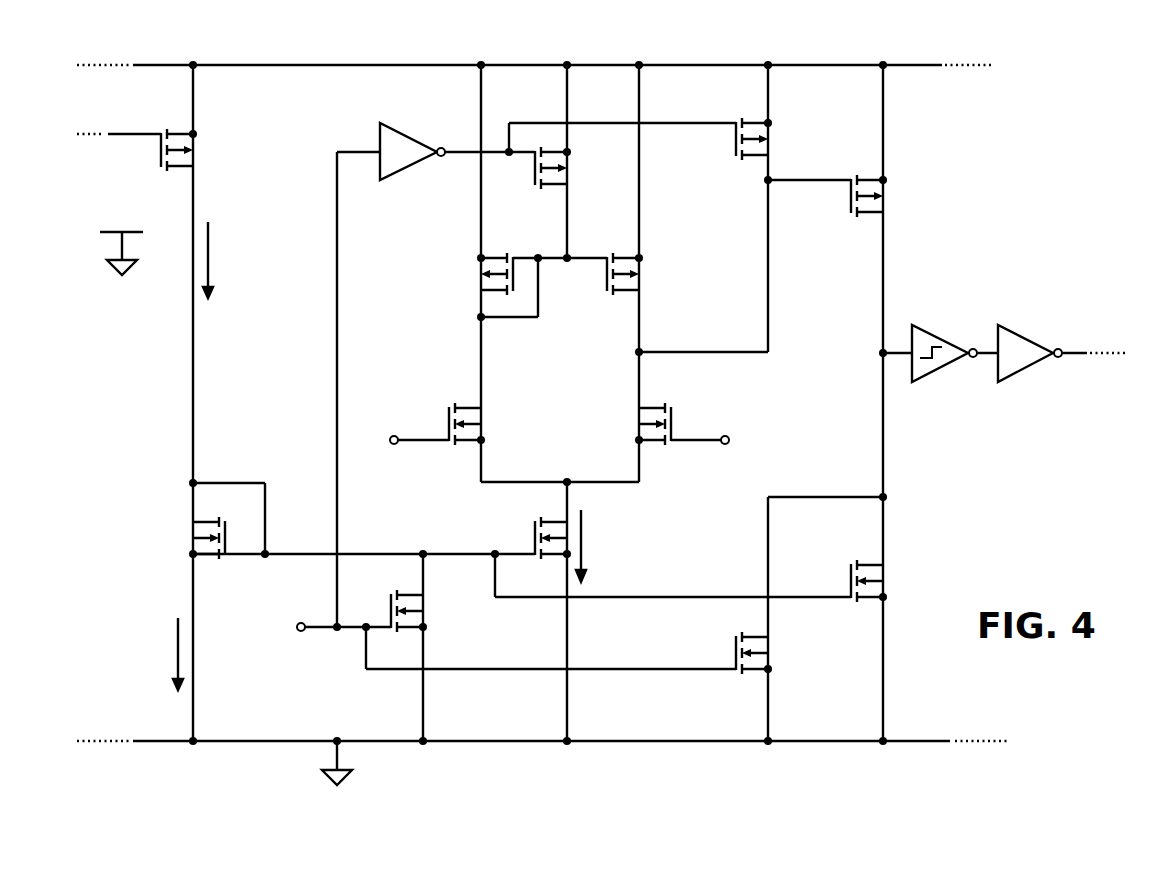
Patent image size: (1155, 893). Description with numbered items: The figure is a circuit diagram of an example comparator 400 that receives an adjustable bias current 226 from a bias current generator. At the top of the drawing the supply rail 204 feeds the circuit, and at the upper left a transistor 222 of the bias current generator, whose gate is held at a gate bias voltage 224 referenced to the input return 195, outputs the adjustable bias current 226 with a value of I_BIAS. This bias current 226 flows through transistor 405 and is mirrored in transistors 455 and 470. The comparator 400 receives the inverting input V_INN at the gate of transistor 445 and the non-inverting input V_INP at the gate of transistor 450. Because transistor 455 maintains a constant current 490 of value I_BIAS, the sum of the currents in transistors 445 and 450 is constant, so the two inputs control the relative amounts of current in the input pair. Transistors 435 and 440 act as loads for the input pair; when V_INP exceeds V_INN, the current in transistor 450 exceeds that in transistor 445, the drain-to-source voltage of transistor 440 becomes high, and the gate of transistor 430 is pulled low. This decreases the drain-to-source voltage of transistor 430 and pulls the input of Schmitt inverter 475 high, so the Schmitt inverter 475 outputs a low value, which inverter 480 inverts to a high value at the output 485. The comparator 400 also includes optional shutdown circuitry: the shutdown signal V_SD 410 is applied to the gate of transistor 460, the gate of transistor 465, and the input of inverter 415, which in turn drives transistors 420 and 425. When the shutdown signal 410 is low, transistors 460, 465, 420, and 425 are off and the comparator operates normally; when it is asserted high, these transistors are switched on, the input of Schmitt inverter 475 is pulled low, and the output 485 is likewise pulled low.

The comparator 400 is at (582, 403).
The supply voltage rail 204 is at (266, 57).
The transistor 222 is at (181, 125).
The gate bias voltage source 224 is at (113, 176).
The adjustable bias current 226 is at (221, 232).
The input return 195 is at (107, 277).
The transistor 405 is at (188, 532).
The shutdown signal V_SD 410 is at (301, 639).
The inverter 415 is at (406, 128).
The transistor 420 is at (572, 175).
The transistor 425 is at (755, 112).
The transistor 430 is at (868, 172).
The transistor 435 is at (476, 283).
The transistor 440 is at (654, 284).
The transistor 445 is at (466, 401).
The transistor 450 is at (653, 402).
The transistor 455 is at (529, 526).
The transistor 460 is at (430, 605).
The transistor 465 is at (772, 650).
The transistor 470 is at (868, 560).
The Schmitt inverter 475 is at (935, 329).
The inverter 480 is at (1025, 329).
The output 485 is at (1098, 366).
The constant current 490 is at (591, 522).